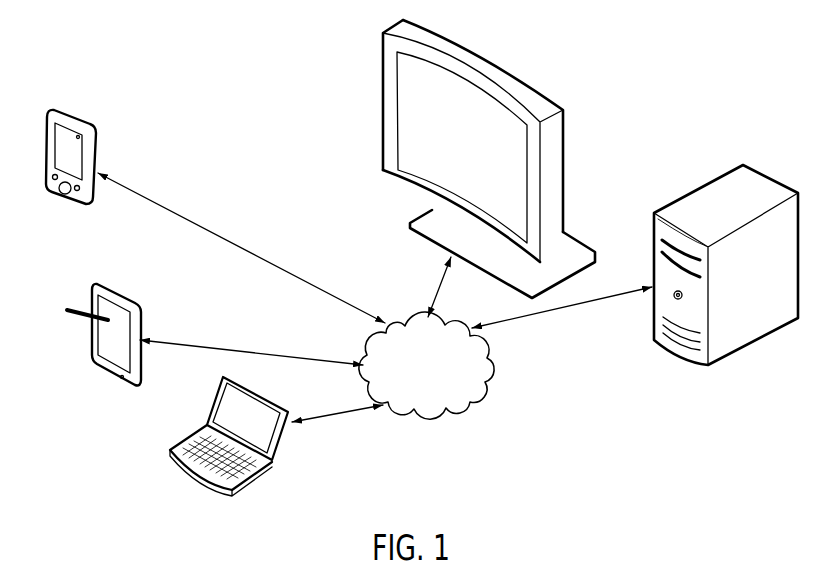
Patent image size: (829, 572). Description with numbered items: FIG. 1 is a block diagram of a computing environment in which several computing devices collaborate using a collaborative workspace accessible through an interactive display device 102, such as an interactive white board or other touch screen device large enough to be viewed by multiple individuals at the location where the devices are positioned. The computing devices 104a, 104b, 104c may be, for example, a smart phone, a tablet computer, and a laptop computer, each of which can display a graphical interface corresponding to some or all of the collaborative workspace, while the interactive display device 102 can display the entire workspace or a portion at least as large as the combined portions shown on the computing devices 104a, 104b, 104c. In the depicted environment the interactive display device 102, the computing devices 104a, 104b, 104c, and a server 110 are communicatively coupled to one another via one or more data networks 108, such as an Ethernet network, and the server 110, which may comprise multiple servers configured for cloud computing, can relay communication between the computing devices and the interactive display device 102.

The interactive display device 102 is at (515, 63).
The computing device 104a is at (102, 130).
The computing device 104b is at (147, 307).
The computing device 104c is at (275, 483).
The network 108 is at (413, 388).
The server 110 is at (640, 205).